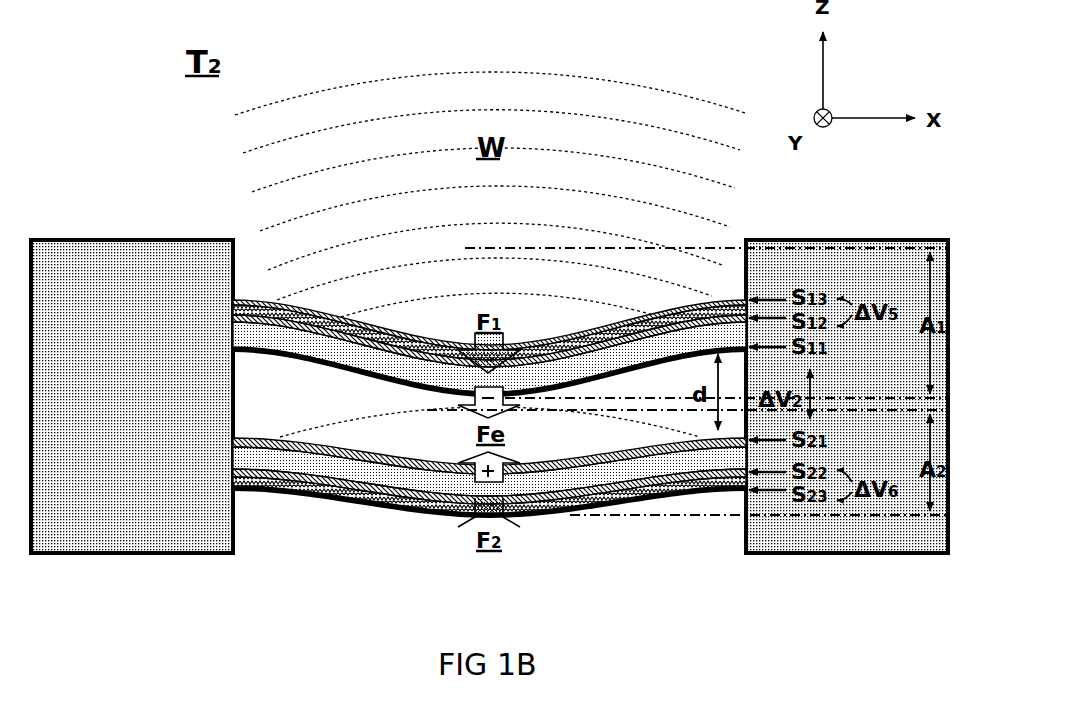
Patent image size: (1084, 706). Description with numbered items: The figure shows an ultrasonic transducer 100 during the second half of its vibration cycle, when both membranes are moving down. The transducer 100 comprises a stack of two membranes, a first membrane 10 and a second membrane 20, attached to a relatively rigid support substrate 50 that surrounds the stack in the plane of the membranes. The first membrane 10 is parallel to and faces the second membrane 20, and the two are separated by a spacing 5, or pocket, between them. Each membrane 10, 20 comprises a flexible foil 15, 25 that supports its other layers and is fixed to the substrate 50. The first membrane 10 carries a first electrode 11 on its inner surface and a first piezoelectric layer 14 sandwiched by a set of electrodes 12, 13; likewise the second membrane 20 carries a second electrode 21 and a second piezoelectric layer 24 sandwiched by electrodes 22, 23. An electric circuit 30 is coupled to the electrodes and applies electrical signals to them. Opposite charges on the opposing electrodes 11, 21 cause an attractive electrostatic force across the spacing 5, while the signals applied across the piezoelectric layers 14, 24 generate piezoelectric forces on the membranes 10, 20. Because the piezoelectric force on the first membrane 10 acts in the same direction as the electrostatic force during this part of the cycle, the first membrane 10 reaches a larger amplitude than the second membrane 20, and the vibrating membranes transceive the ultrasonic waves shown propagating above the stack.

The ultrasonic transducer 100 is at (122, 128).
The first membrane 10 is at (438, 304).
The first electrode 11 is at (229, 347).
The electrode 12 is at (229, 318).
The electrode 13 is at (229, 296).
The first piezoelectric layer 14 is at (229, 309).
The flexible foil 15 is at (229, 333).
The second membrane 20 is at (438, 506).
The second electrode 21 is at (229, 444).
The electrode 22 is at (229, 473).
The electrode 23 is at (229, 496).
The second piezoelectric layer 24 is at (229, 484).
The flexible foil 25 is at (229, 458).
The electric circuit 30 is at (847, 237).
The substrate 50 is at (72, 275).
The spacing 5 is at (332, 417).